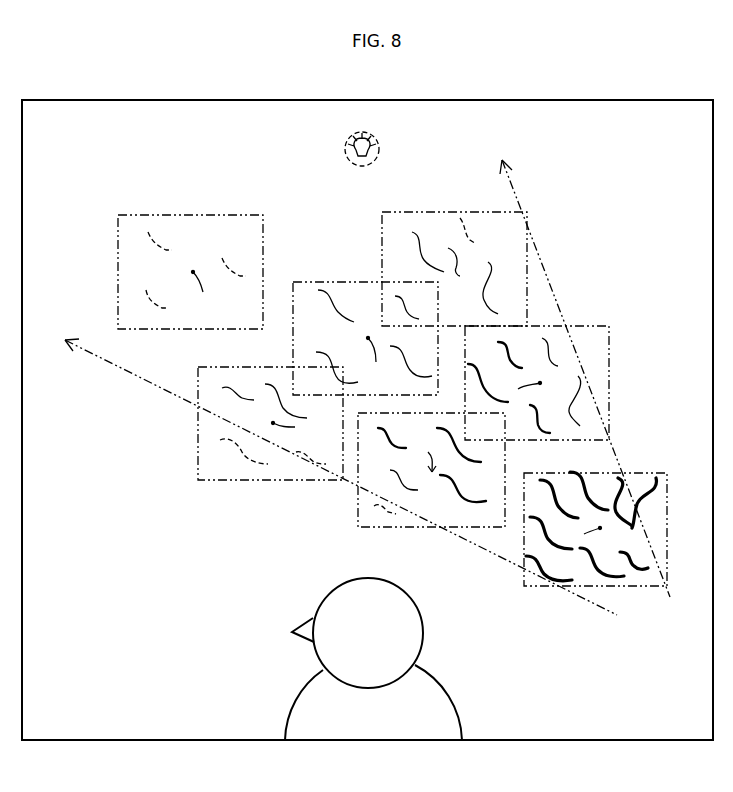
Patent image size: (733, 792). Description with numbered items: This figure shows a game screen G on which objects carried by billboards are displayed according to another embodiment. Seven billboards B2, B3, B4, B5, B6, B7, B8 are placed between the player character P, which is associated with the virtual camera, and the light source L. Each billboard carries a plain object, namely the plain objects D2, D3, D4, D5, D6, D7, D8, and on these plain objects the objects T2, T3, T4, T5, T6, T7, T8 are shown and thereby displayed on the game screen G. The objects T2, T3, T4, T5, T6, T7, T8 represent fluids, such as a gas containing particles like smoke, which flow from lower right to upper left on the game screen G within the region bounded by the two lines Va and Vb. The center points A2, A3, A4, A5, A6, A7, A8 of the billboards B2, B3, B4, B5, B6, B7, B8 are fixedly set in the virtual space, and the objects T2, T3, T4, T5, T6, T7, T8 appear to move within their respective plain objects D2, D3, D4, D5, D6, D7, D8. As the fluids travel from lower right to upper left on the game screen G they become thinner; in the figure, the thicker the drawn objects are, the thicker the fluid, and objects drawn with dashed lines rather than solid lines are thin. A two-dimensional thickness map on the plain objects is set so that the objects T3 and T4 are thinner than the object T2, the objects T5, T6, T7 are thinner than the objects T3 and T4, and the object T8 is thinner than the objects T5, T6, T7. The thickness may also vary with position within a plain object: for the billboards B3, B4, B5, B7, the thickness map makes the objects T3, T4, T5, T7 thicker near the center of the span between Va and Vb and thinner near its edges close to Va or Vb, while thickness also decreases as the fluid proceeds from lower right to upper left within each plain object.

The game screen G is at (497, 100).
The light source L is at (346, 150).
The player character P is at (462, 718).
The flow boundary line Va is at (572, 296).
The flow boundary line Vb is at (128, 370).
The plain object D2 is at (636, 580).
The plain object D3 is at (610, 340).
The plain object D4 is at (374, 520).
The plain object D5 is at (490, 230).
The plain object D6 is at (372, 292).
The plain object D7 is at (210, 454).
The plain object D8 is at (244, 225).
The billboard B2 is at (658, 602).
The billboard B3 is at (634, 374).
The billboard B4 is at (426, 539).
The billboard B5 is at (454, 196).
The billboard B6 is at (338, 258).
The billboard B7 is at (204, 496).
The billboard B8 is at (186, 198).
The object T2 is at (546, 580).
The object T3 is at (588, 419).
The object T4 is at (475, 500).
The object T5 is at (426, 238).
The object T6 is at (330, 304).
The object T7 is at (240, 456).
The object T8 is at (150, 232).
The center point A2 is at (577, 536).
The center point A3 is at (514, 384).
The center point A4 is at (424, 451).
The center point A5 is at (435, 234).
The center point A6 is at (378, 362).
The center point A7 is at (297, 436).
The center point A8 is at (199, 295).